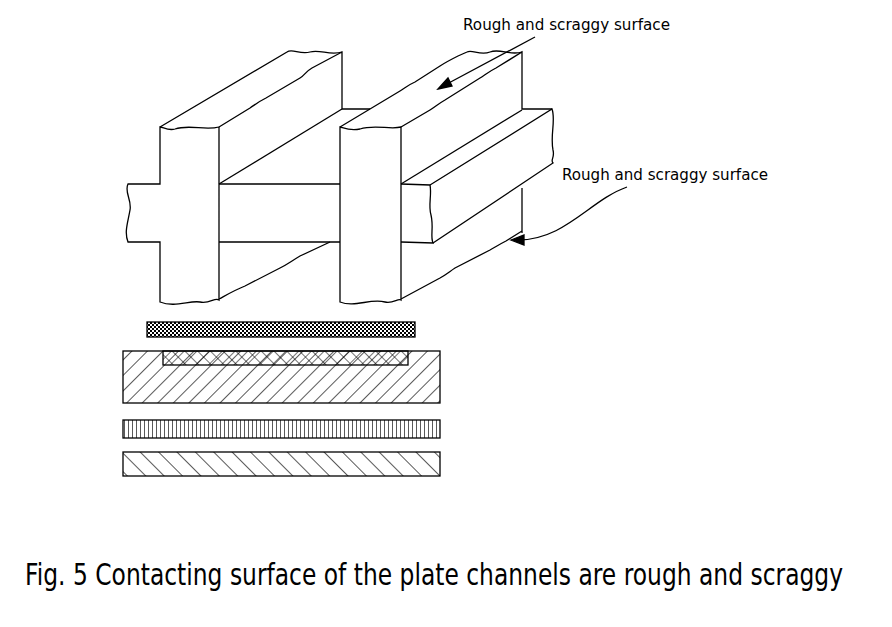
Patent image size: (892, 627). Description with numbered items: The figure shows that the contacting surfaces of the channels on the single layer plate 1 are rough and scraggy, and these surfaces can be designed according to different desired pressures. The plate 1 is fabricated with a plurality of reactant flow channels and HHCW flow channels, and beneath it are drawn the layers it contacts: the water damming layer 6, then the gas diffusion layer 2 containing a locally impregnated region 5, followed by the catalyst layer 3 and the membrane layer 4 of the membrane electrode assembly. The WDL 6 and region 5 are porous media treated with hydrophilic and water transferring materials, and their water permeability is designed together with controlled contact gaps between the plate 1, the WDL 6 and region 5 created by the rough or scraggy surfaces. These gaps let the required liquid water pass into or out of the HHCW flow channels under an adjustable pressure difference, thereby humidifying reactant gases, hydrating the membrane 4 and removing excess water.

The single layer plate 1 is at (412, 217).
The gas diffusion layer 2 is at (406, 388).
The catalyst layer 3 is at (406, 427).
The membrane layer 4 is at (406, 466).
The locally impregnated region 5 is at (398, 358).
The water damming layer 6 is at (409, 324).